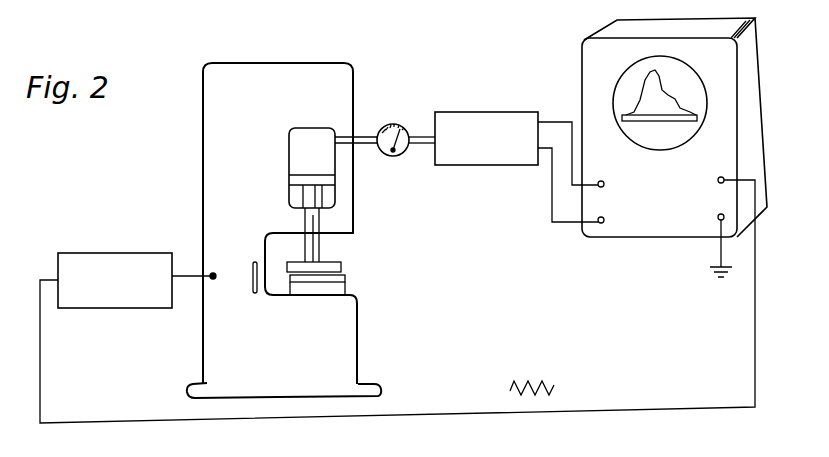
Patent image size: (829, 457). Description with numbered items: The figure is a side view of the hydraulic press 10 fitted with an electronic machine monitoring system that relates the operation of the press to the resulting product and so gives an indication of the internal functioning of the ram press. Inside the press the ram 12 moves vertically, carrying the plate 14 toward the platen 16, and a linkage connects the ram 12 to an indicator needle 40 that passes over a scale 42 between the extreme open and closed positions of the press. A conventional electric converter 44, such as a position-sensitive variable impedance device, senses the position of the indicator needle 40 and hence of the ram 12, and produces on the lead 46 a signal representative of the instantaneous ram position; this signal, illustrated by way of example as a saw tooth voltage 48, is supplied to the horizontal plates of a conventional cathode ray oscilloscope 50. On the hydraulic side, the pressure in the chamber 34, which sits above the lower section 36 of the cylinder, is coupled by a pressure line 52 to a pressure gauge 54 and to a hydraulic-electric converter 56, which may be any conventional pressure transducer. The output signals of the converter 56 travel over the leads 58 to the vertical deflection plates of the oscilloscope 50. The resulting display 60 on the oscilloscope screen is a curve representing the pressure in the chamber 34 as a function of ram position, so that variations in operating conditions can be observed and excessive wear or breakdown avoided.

The hydraulic press 10 is at (200, 127).
The ram 12 is at (320, 250).
The upper plate 14 is at (343, 265).
The lower platen 16 is at (346, 278).
The chamber 34 is at (297, 160).
The cylinder lower section 36 is at (330, 182).
The indicator needle 40 is at (251, 270).
The scale 42 is at (254, 294).
The electric converter 44 is at (86, 253).
The lead 46 is at (678, 412).
The saw tooth voltage 48 is at (556, 383).
The cathode ray oscilloscope 50 is at (757, 44).
The pressure line 52 is at (360, 137).
The pressure gauge 54 is at (398, 125).
The hydraulic-electric converter 56 is at (517, 112).
The leads 58 is at (572, 172).
The display 60 is at (659, 121).